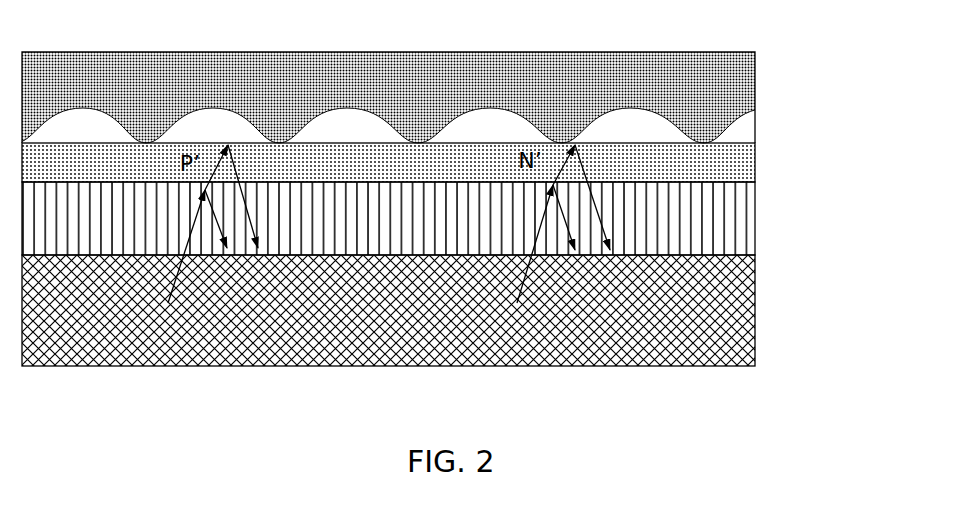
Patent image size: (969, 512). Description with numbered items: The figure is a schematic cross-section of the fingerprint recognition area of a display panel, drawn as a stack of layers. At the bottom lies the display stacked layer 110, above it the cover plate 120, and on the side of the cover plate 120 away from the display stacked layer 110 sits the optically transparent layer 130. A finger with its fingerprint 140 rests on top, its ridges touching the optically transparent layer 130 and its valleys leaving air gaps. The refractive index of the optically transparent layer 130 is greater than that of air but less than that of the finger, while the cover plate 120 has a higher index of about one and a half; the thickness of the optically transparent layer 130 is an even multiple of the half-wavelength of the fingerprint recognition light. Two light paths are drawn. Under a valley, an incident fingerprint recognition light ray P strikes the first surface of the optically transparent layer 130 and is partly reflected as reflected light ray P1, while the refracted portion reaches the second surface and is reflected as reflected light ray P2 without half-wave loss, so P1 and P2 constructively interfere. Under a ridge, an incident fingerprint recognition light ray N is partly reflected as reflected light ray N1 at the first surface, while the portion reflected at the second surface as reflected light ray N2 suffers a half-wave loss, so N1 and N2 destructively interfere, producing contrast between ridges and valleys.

The display stacked layer 110 is at (700, 312).
The cover plate 120 is at (700, 218).
The optically transparent layer 130 is at (700, 163).
The fingerprint 140 is at (700, 78).
The incident fingerprint recognition light ray P is at (179, 246).
The reflected fingerprint recognition light ray P1 is at (224, 237).
The reflected fingerprint recognition light ray P2 is at (258, 214).
The incident fingerprint recognition light ray N is at (528, 244).
The reflected fingerprint recognition light ray N1 is at (572, 235).
The reflected fingerprint recognition light ray N2 is at (607, 215).